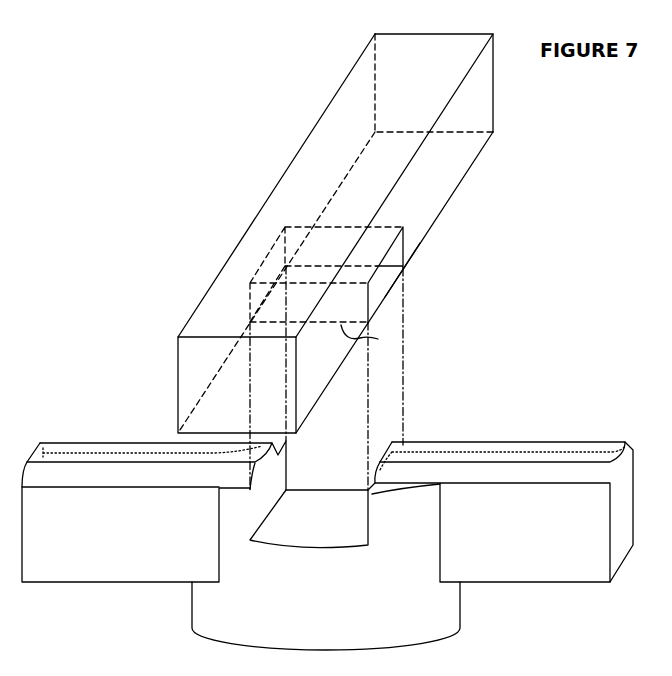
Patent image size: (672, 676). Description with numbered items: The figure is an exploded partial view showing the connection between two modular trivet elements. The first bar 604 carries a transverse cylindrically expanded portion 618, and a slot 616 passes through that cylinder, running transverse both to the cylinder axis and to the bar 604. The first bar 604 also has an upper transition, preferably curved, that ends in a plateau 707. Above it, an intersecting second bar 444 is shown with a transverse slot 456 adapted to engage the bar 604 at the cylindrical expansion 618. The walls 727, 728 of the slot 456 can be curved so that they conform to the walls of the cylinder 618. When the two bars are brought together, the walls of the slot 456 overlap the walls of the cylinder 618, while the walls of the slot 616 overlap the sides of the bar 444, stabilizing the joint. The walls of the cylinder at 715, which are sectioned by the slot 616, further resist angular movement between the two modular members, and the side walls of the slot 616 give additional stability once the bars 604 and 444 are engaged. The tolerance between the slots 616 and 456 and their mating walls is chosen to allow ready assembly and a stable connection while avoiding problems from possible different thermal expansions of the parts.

The second bar 444 is at (340, 92).
The transverse slot 456 is at (378, 264).
The wall of slot 727 is at (400, 278).
The wall of slot 728 is at (378, 339).
The plateau 707 is at (135, 447).
The first bar 604 is at (154, 511).
The walls of the cylinder 715 is at (390, 488).
The cylindrically expanded portion 618 is at (326, 616).
The slot 616 is at (325, 520).